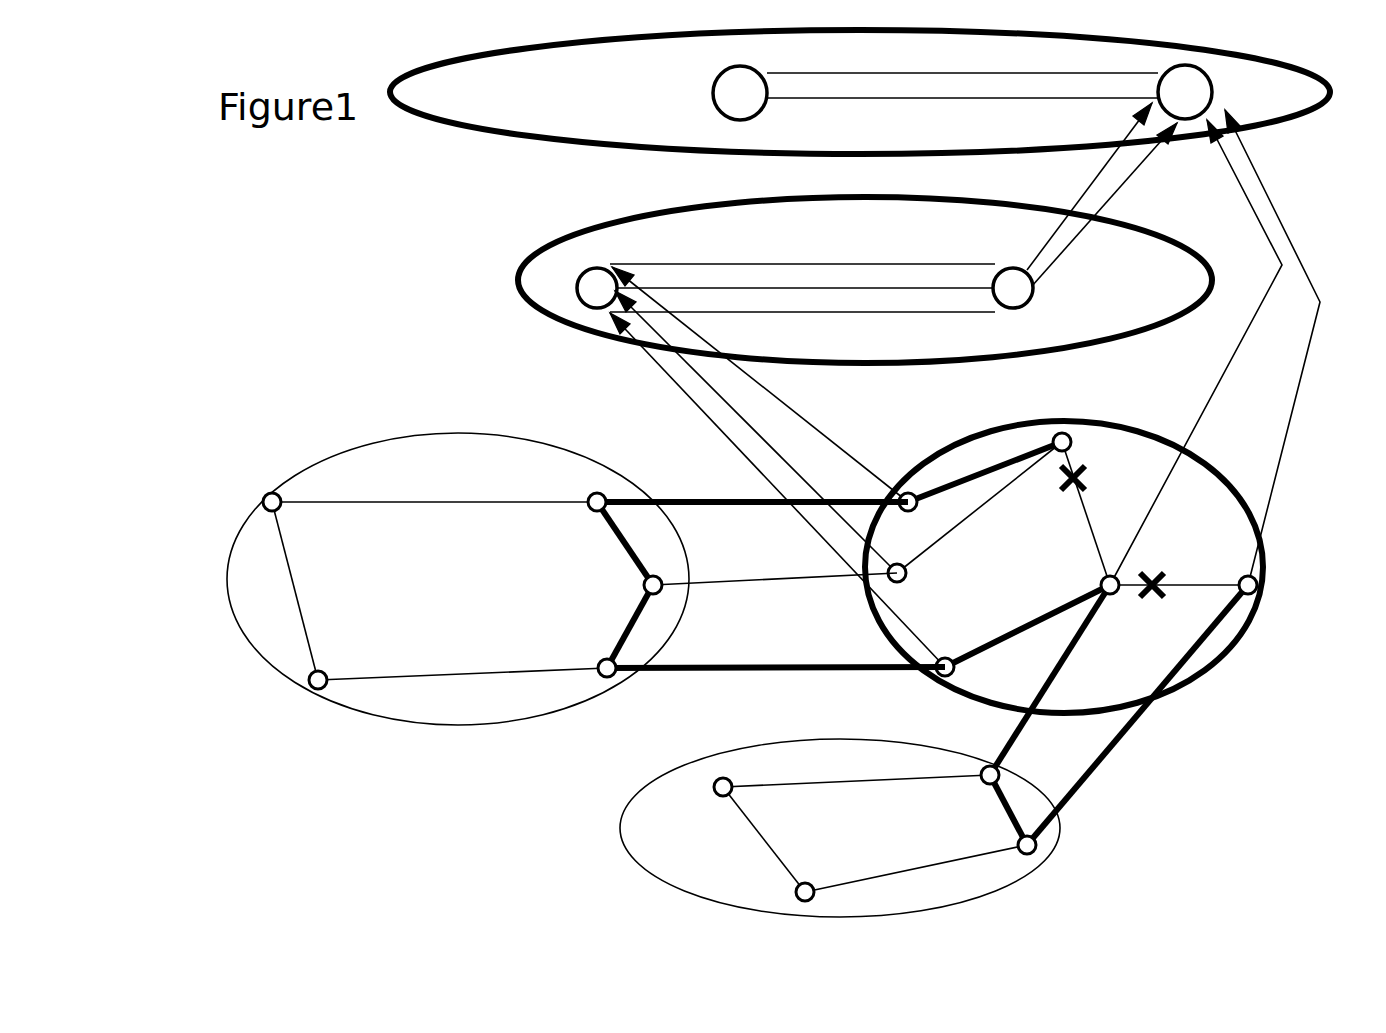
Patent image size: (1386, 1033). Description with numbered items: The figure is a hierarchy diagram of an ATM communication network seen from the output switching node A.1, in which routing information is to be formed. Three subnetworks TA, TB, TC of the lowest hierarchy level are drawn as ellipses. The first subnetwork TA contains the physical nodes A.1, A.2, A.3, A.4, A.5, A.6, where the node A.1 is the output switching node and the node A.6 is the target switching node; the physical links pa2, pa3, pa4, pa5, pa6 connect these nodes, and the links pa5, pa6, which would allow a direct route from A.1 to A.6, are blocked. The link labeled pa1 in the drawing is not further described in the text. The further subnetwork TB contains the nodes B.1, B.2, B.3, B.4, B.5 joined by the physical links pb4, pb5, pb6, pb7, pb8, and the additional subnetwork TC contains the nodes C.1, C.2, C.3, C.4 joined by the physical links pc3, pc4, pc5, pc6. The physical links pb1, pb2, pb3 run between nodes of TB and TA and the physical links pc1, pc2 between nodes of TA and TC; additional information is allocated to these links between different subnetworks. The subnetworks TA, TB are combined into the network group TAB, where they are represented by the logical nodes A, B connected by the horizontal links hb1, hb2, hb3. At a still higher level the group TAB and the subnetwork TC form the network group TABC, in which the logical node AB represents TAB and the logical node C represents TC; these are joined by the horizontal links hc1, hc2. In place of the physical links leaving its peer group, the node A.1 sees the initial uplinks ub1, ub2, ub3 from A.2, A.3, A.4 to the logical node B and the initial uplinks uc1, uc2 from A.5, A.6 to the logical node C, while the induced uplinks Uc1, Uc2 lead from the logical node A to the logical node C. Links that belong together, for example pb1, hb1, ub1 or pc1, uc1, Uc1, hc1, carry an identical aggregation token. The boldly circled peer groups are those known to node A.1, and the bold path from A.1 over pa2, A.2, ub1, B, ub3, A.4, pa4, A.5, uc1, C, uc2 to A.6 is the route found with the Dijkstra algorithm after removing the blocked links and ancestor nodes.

The network group TABC is at (490, 135).
The network group TAB is at (515, 290).
The first subnetwork TA is at (1215, 668).
The further subnetwork TB is at (458, 432).
The additional further subnetwork TC is at (632, 797).
The logical node AB is at (693, 90).
The logical node C is at (1208, 92).
The logical node A is at (1032, 289).
The logical node B is at (577, 285).
The horizontal link hc1 is at (962, 57).
The horizontal link hc2 is at (962, 112).
The horizontal link hb1 is at (802, 248).
The horizontal link hb2 is at (805, 275).
The horizontal link hb3 is at (802, 332).
The induced uplink Uc1 is at (1089, 186).
The induced uplink Uc2 is at (1104, 204).
The initial uplink ub1 is at (760, 384).
The initial uplink ub2 is at (756, 432).
The initial uplink ub3 is at (777, 490).
The initial uplink uc1 is at (1196, 352).
The initial uplink uc2 is at (1272, 347).
The physical link pa1 is at (985, 472).
The physical link pa2 is at (1085, 513).
The physical link pa3 is at (979, 507).
The physical link pa4 is at (1027, 626).
The physical link pa5 is at (1068, 542).
The physical link pa6 is at (1179, 576).
The physical link pb1 is at (752, 487).
The physical link pb2 is at (775, 569).
The physical link pb3 is at (776, 652).
The physical link pb4 is at (434, 487).
The physical link pb5 is at (308, 591).
The physical link pb6 is at (462, 664).
The physical link pb7 is at (624, 626).
The physical link pb8 is at (606, 543).
The physical link pc1 is at (1056, 680).
The physical link pc2 is at (1137, 715).
The physical link pc3 is at (856, 772).
The physical link pc4 is at (770, 839).
The physical link pc5 is at (916, 868).
The physical link pc6 is at (991, 810).
The output switching node A.1 is at (1074, 419).
The physical node A.2 is at (895, 479).
The physical node A.3 is at (916, 580).
The physical node A.4 is at (976, 677).
The physical node A.5 is at (1127, 567).
The target switching node A.6 is at (1310, 640).
The node B.1 is at (252, 491).
The node B.2 is at (577, 491).
The node B.3 is at (628, 580).
The node B.4 is at (589, 657).
The node B.5 is at (298, 669).
The node C.1 is at (958, 769).
The node C.2 is at (697, 789).
The node C.3 is at (768, 886).
The node C.4 is at (1002, 850).